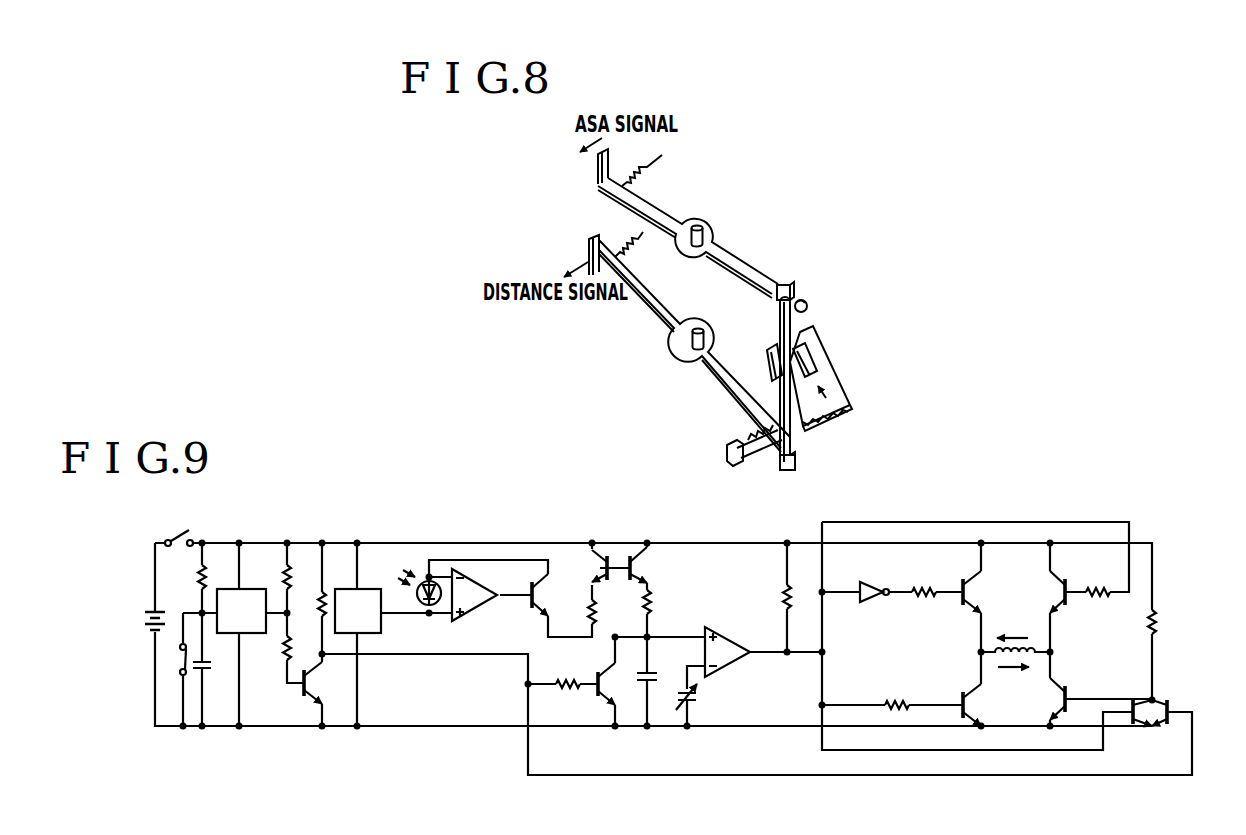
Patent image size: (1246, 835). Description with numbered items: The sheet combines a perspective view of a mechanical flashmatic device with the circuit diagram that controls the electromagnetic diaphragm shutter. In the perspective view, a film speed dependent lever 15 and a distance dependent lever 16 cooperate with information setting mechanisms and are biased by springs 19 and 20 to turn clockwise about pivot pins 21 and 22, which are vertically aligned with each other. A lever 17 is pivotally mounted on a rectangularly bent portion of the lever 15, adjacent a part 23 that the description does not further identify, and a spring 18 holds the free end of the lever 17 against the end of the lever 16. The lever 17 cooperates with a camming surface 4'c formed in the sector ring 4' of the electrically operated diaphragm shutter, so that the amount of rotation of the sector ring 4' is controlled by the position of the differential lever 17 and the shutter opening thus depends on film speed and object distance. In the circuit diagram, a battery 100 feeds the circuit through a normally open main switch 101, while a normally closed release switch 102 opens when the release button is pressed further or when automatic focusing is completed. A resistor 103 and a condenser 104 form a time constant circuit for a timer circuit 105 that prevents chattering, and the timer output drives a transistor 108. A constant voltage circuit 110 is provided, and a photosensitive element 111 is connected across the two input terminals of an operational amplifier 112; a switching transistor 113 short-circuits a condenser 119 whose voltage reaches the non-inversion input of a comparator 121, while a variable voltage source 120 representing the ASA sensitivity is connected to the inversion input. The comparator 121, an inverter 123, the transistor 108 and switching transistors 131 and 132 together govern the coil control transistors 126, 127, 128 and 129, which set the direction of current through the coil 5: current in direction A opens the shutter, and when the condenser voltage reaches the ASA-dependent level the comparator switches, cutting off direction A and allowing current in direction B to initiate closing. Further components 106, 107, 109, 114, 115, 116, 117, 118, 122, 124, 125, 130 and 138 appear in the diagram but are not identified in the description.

In FIG. 8, the film speed dependent lever 15 is at (745, 264).
In FIG. 8, the distance dependent lever 16 is at (670, 314).
In FIG. 8, the differential lever 17 is at (783, 324).
In FIG. 8, the spring 18 is at (752, 455).
In FIG. 8, the spring 19 is at (649, 172).
In FIG. 8, the spring 20 is at (623, 242).
In FIG. 8, the pivot pin 21 is at (702, 228).
In FIG. 8, the pivot pin 22 is at (702, 328).
In FIG. 8, the pivot pin 23 is at (808, 305).
In FIG. 8, the sector ring 4' is at (827, 380).
In FIG. 8, the camming surface 4'c is at (842, 370).
In FIG. 9, the battery 100 is at (138, 620).
In FIG. 9, the main switch 101 is at (181, 524).
In FIG. 9, the release switch 102 is at (178, 655).
In FIG. 9, the resistor 103 is at (184, 576).
In FIG. 9, the condenser 104 is at (207, 672).
In FIG. 9, the timer circuit 105 is at (241, 611).
In FIG. 9, the resistor 106 is at (269, 650).
In FIG. 9, the resistor 107 is at (270, 576).
In FIG. 9, the transistor 108 is at (312, 684).
In FIG. 9, the resistor 109 is at (318, 610).
In FIG. 9, the constant voltage circuit 110 is at (358, 611).
In FIG. 9, the photosensitive element 111 is at (424, 605).
In FIG. 9, the operational amplifier 112 is at (474, 601).
In FIG. 9, the switching transistor 113 is at (538, 595).
In FIG. 9, the resistor 114 is at (611, 610).
In FIG. 9, the transistor 115 is at (604, 568).
In FIG. 9, the transistor 116 is at (645, 570).
In FIG. 9, the resistor 117 is at (664, 600).
In FIG. 9, the resistor 118 is at (569, 670).
In FIG. 9, the condenser 119 is at (663, 674).
In FIG. 9, the variable voltage source 120 is at (693, 705).
In FIG. 9, the comparator 121 is at (724, 648).
In FIG. 9, the resistor 122 is at (770, 598).
In FIG. 9, the inverter 123 is at (872, 601).
In FIG. 9, the resistor 124 is at (923, 577).
In FIG. 9, the resistor 125 is at (896, 688).
In FIG. 9, the coil control transistor 126 is at (975, 594).
In FIG. 9, the coil control transistor 127 is at (975, 707).
In FIG. 9, the coil control transistor 128 is at (1067, 583).
In FIG. 9, the coil control transistor 129 is at (1066, 692).
In FIG. 9, the resistor 130 is at (1170, 620).
In FIG. 9, the switching transistor 131 is at (1135, 730).
In FIG. 9, the switching transistor 132 is at (1166, 710).
In FIG. 9, the transistor 138 is at (601, 696).
In FIG. 9, the coil 5 is at (1031, 648).
In FIG. 9, the forward current direction A is at (1013, 682).
In FIG. 9, the reverse current direction B is at (1012, 622).